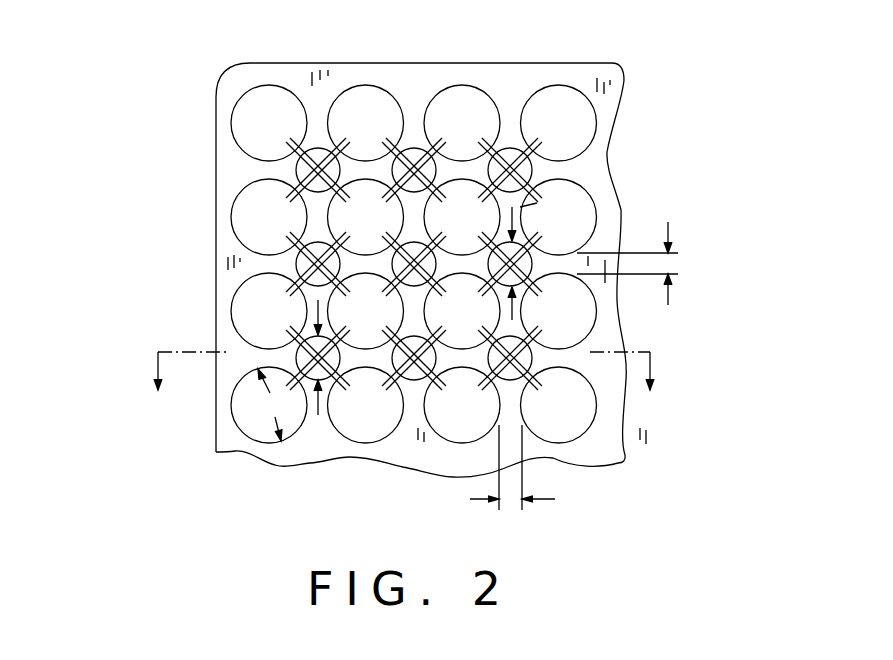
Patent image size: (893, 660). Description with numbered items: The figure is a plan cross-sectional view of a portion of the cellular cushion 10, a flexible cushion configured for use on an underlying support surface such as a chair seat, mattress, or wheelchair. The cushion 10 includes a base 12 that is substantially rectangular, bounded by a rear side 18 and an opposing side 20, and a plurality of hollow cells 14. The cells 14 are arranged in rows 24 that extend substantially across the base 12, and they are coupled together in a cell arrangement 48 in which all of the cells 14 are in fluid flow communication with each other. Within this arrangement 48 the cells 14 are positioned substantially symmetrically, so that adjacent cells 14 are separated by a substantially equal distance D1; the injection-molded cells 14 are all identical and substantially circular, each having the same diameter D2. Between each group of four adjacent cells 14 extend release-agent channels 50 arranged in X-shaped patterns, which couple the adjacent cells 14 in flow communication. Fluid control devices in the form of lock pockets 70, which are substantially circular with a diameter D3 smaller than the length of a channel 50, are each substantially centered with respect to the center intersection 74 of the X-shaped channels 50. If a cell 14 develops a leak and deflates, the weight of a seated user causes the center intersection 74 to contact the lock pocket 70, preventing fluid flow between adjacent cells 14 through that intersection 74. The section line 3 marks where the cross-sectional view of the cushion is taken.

The cellular cushion 10 is at (127, 163).
The base 12 is at (378, 63).
The hollow cells 14 is at (539, 88).
The rear side 18 is at (310, 63).
The opposing side 20 is at (216, 218).
The rows 24 is at (633, 115).
The cell arrangement 48 is at (635, 97).
The release-agent channels 50 is at (525, 168).
The lock pockets 70 is at (412, 158).
The center intersection 74 is at (302, 167).
The distance between adjacent cells D1 is at (579, 356).
The cell diameter D2 is at (272, 405).
The lock pocket diameter D3 is at (439, 320).
The section line 3- 3 is at (407, 388).